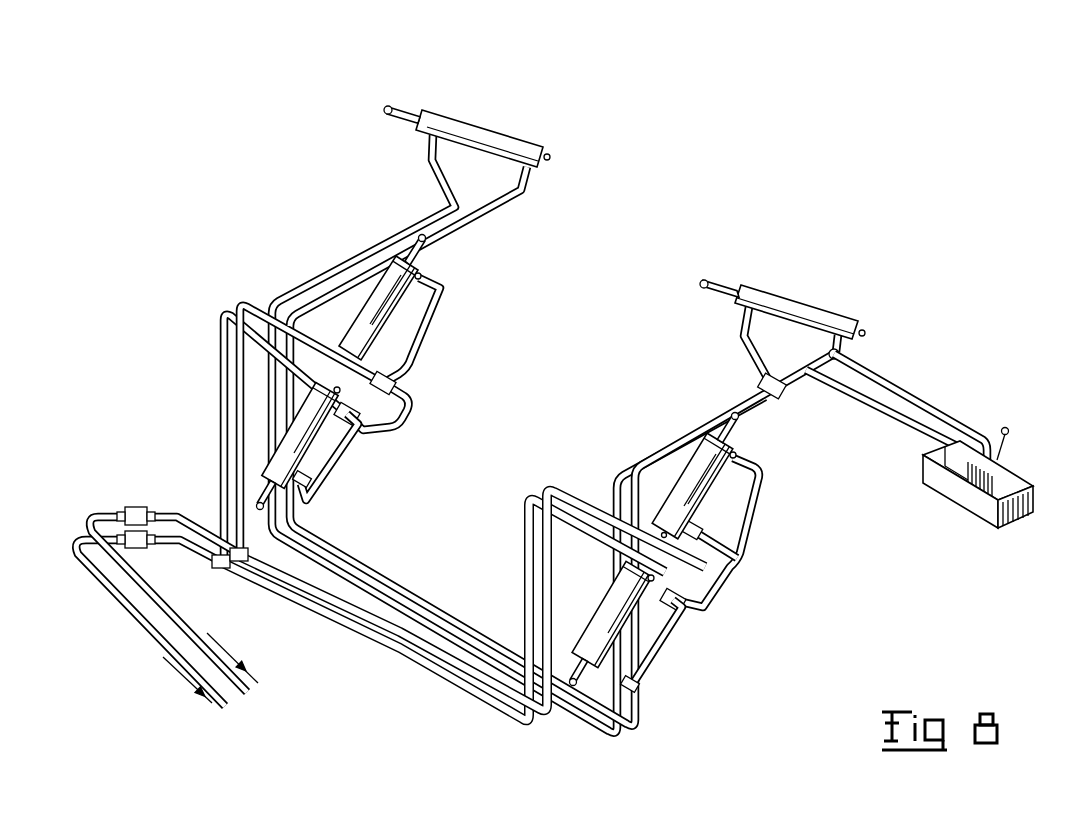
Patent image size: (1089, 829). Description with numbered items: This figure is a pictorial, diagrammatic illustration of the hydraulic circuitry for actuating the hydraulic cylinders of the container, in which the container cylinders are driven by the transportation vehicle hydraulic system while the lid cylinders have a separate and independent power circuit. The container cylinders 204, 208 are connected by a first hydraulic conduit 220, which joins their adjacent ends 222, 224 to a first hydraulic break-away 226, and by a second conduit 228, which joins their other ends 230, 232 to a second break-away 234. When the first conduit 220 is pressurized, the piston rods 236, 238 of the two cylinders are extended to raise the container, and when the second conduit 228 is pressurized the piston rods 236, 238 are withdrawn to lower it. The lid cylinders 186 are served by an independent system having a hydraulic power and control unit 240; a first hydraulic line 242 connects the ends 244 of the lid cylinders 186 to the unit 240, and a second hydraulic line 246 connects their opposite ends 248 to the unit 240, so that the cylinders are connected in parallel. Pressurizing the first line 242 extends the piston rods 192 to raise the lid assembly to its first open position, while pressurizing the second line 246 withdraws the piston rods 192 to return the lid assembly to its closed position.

The hydraulic cylinder 186 is at (473, 124).
The piston rod 192 is at (405, 105).
The end of cylinder 248 is at (428, 148).
The end of cylinder 244 is at (528, 182).
The piston rod 238 is at (425, 257).
The end of cylinder 232 is at (387, 302).
The hydraulic cylinder 208 is at (390, 328).
The end of cylinder 224 is at (407, 372).
The end of cylinder 222 is at (358, 428).
The hydraulic cylinder 204 is at (322, 452).
The end of cylinder 230 is at (305, 474).
The piston rod 236 is at (274, 504).
The second break-away 234 is at (132, 507).
The first break-away 226 is at (143, 548).
The first hydraulic conduit 220 is at (524, 533).
The second hydraulic conduit 228 is at (541, 560).
The first hydraulic line 242 is at (917, 393).
The second hydraulic line 246 is at (893, 403).
The hydraulic power and control unit 240 is at (1007, 467).